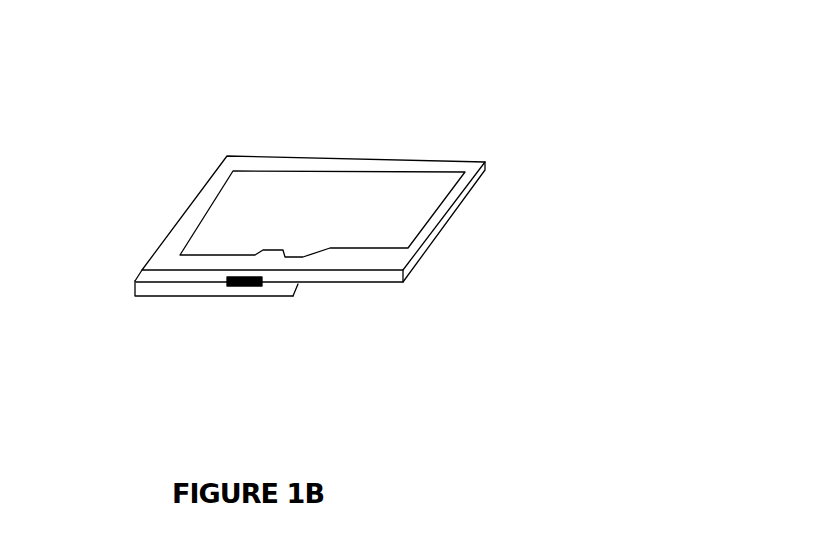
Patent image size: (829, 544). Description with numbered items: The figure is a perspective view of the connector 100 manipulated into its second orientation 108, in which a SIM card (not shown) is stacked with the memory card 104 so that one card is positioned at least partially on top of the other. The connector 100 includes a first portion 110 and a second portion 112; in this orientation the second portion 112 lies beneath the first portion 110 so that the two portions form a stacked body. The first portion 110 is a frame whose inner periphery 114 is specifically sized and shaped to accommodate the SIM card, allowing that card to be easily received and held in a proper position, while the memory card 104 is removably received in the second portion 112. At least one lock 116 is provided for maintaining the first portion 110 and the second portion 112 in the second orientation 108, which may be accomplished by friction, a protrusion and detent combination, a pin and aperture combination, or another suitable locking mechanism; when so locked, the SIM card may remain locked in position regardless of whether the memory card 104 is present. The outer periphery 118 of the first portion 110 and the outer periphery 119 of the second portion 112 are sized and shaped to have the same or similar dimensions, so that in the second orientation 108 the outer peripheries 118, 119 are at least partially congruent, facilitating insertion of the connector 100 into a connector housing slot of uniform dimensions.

The connector 100 is at (612, 66).
The memory card 104 is at (337, 190).
The second orientation 108 is at (125, 283).
The first portion 110 is at (160, 295).
The second portion 112 is at (385, 287).
The inner periphery 114 is at (228, 157).
The lock 116 is at (240, 286).
The outer periphery 118 is at (485, 162).
The outer periphery 119 is at (265, 283).